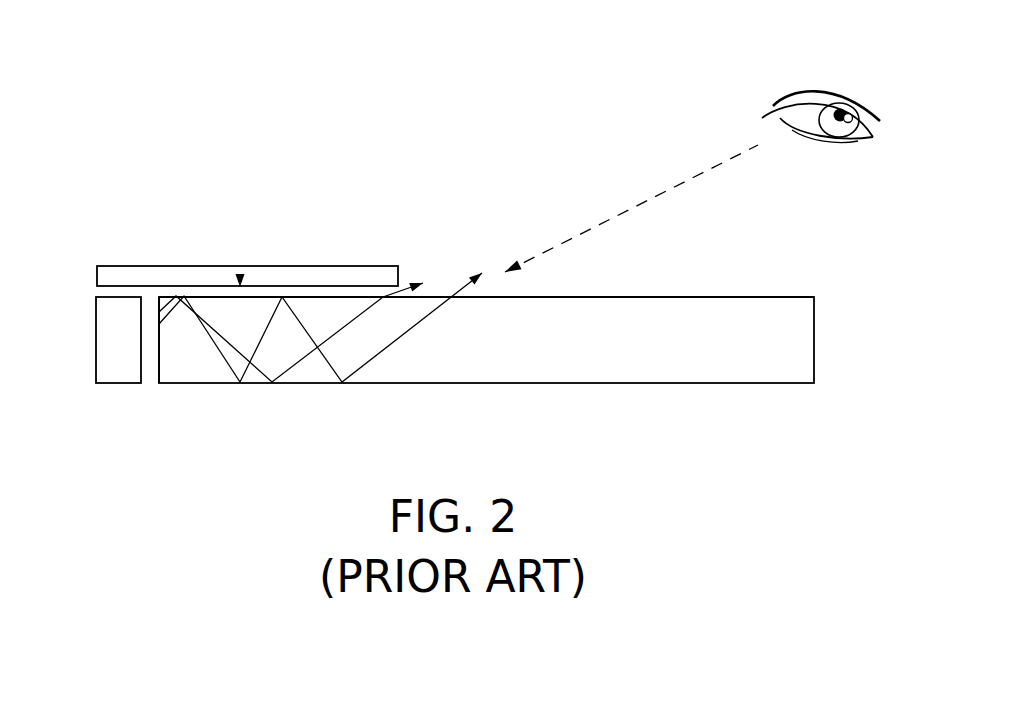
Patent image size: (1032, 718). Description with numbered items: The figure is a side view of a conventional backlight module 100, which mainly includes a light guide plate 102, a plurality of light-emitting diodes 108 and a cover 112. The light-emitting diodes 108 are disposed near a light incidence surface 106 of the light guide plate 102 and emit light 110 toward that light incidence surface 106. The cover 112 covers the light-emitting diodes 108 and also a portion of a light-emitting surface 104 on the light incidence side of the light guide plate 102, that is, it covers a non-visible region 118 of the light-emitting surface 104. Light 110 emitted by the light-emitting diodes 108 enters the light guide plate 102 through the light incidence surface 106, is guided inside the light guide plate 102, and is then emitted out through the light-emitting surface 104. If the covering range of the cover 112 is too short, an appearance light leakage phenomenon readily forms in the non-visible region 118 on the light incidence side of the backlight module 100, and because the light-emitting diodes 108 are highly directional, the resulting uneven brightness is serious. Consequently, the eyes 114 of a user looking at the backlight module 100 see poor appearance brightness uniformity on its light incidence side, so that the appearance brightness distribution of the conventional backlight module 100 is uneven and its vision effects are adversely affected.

The backlight module 100 is at (150, 198).
The light guide plate 102 is at (802, 340).
The light-emitting surface 104 is at (768, 296).
The light incidence surface 106 is at (157, 370).
The light-emitting diodes 108 is at (102, 338).
The light 110 is at (402, 340).
The cover 112 is at (358, 273).
The eyes 114 is at (828, 88).
The non-visible region 118 is at (240, 287).